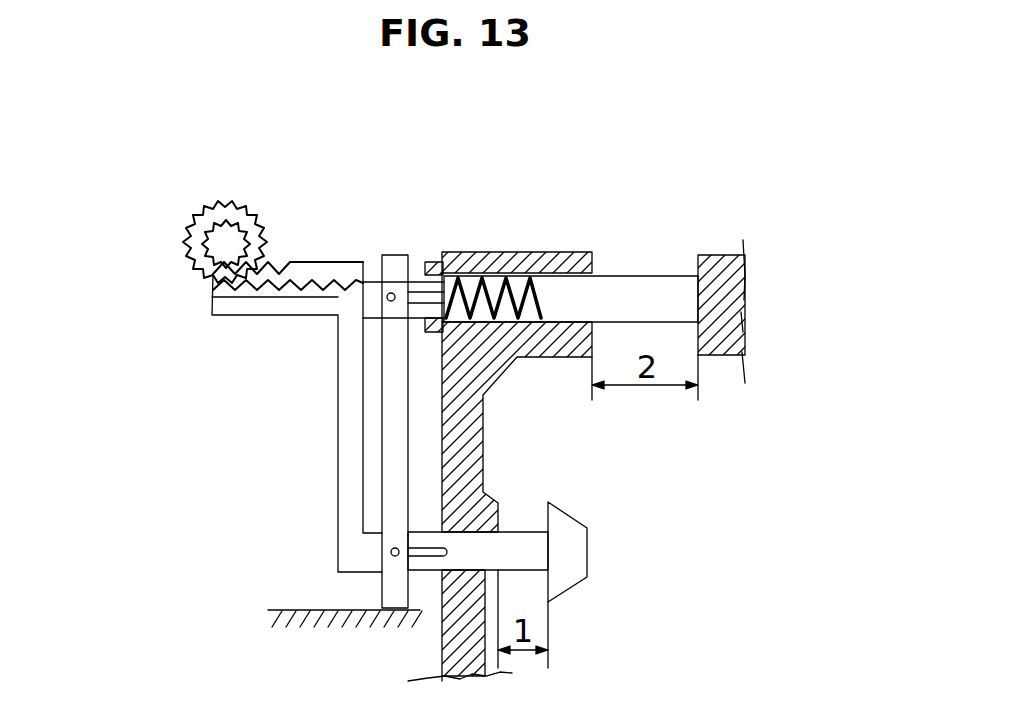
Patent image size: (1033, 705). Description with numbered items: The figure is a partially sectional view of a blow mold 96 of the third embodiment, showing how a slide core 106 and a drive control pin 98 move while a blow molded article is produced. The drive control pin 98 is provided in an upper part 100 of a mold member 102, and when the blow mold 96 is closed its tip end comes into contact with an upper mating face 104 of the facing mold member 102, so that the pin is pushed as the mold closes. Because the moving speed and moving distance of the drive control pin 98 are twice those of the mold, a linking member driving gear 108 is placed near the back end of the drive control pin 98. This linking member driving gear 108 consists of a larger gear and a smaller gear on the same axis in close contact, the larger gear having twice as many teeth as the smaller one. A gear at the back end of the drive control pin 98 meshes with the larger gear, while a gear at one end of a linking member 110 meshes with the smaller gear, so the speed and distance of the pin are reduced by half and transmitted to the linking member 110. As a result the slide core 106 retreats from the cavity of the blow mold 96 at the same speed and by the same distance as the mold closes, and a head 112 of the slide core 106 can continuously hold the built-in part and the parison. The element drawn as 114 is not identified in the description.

The blow mold 96 is at (520, 244).
The drive control pin 98 is at (616, 297).
The upper part 100 is at (567, 258).
The mold member 102 is at (475, 456).
The upper mating face 104 is at (700, 257).
The slide core 106 is at (518, 521).
The linking member driving gear 108 is at (197, 220).
The linking member 110 is at (392, 420).
The head 112 is at (568, 555).
The L-shaped frame 114 is at (362, 553).